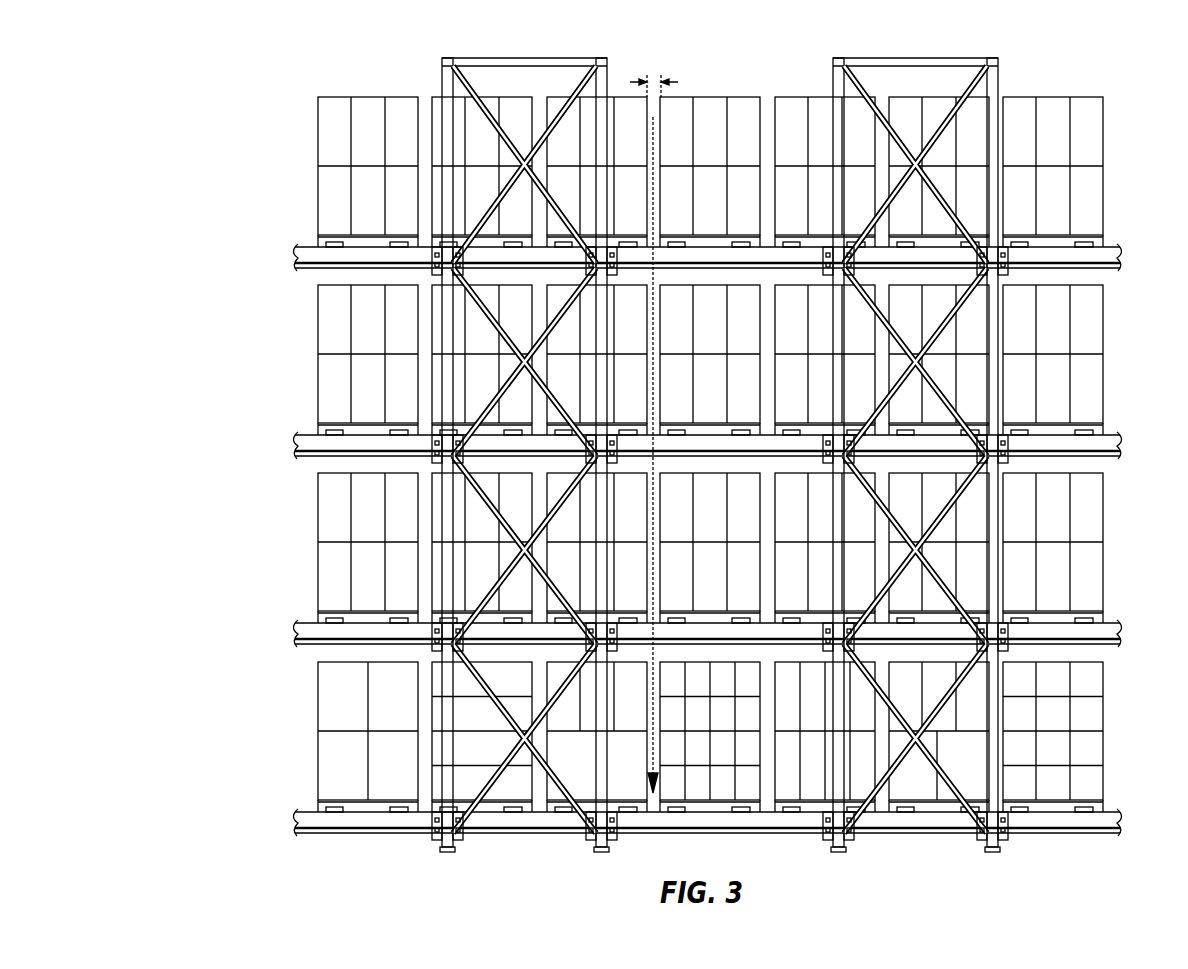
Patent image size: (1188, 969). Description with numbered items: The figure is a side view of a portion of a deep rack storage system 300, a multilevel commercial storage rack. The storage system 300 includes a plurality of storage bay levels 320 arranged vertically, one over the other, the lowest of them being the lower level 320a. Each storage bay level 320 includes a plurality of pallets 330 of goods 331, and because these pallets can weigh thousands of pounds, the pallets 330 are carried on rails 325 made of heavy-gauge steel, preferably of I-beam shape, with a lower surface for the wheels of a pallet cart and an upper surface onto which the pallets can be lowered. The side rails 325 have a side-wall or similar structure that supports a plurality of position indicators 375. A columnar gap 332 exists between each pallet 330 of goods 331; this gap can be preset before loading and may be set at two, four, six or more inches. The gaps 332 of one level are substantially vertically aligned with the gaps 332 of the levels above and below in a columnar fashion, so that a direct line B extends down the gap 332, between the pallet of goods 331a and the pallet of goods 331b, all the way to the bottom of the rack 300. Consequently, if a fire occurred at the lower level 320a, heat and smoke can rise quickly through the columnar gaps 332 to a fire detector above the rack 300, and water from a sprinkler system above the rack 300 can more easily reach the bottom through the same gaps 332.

The deep rack storage system 300 is at (615, 435).
The storage bay level 320 is at (641, 320).
The lower level 320a is at (297, 746).
The rail 325 is at (1072, 257).
The pallet 330 is at (368, 242).
The goods 331 is at (368, 95).
The pallet of goods 331a is at (633, 96).
The pallet of goods 331b is at (745, 95).
The columnar gap 332 is at (657, 78).
The position indicator 375 is at (490, 442).
The direct line B is at (656, 150).